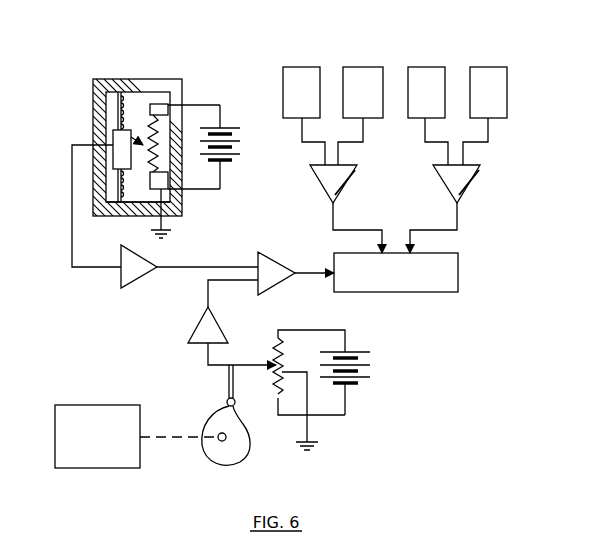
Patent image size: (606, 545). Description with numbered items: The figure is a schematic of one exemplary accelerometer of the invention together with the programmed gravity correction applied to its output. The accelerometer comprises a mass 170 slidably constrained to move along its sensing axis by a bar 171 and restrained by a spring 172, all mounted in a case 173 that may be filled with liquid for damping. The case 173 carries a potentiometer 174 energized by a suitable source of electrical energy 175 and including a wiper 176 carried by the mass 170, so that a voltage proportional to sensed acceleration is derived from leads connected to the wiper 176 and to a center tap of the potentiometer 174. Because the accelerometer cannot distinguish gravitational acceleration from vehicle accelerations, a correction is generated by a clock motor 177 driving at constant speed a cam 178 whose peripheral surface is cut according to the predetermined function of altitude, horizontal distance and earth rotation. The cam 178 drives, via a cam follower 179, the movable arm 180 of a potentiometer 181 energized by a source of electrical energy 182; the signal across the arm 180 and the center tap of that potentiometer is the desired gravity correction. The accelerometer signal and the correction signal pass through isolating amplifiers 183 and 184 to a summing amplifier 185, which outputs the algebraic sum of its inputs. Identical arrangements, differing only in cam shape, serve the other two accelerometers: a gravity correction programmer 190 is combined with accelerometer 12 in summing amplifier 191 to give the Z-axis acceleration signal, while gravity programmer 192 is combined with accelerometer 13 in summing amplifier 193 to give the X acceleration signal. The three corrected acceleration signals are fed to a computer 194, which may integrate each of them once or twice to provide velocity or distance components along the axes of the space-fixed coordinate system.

The accelerometer 12 is at (297, 73).
The accelerometer 13 is at (422, 73).
The mass 170 is at (120, 157).
The bar 171 is at (118, 107).
The spring 172 is at (122, 208).
The case 173 is at (127, 82).
The potentiometer 174 is at (153, 118).
The source of electrical energy 175 is at (222, 128).
The wiper 176 is at (130, 140).
The clock motor 177 is at (88, 413).
The cam 178 is at (240, 428).
The cam follower 179 is at (227, 383).
The movable arm 180 is at (257, 363).
The potentiometer 181 is at (283, 352).
The source of electrical energy 182 is at (358, 358).
The isolating amplifier 183 is at (138, 268).
The isolating amplifier 184 is at (215, 322).
The summing amplifier 185 is at (270, 263).
The gravity correction programmer 190 is at (352, 73).
The summing amplifier 191 is at (338, 193).
The gravity programmer 192 is at (482, 73).
The summing amplifier 193 is at (462, 193).
The computer 194 is at (458, 273).